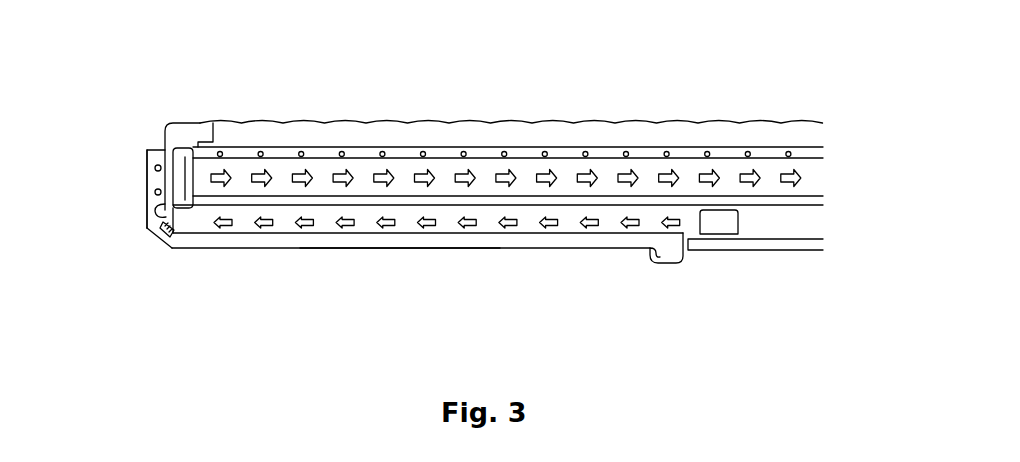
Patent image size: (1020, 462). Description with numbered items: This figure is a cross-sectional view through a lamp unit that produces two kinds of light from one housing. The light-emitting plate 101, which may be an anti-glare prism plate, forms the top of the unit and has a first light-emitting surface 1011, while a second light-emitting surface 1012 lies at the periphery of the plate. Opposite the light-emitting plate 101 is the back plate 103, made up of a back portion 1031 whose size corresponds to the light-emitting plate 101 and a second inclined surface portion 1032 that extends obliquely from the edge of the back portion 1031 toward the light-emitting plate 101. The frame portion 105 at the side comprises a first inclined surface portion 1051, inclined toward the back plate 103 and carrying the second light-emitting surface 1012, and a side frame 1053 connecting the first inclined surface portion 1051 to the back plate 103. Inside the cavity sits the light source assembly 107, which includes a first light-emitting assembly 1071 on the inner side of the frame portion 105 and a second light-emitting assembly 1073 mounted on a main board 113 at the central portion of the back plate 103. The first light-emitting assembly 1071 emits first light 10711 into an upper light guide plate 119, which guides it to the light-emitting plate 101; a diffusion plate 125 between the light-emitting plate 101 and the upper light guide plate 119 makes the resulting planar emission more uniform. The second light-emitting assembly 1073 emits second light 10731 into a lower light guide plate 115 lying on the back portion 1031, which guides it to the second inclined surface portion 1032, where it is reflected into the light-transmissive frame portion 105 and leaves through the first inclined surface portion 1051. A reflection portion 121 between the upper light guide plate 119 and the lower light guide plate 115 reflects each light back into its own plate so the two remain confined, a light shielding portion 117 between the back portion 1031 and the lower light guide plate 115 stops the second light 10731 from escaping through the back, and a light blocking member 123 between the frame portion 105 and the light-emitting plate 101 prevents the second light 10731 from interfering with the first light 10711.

The light-emitting plate 101 is at (805, 135).
The first light-emitting surface 1011 is at (748, 122).
The second light-emitting surface 1012 is at (165, 142).
The light blocking member 123 is at (189, 127).
The diffusion plate 125 is at (803, 155).
The first light 10711 is at (802, 179).
The upper light guide plate 119 is at (812, 191).
The reflection portion 121 is at (813, 203).
The lower light guide plate 115 is at (343, 228).
The light shielding portion 117 is at (264, 235).
The back plate 103 is at (495, 250).
The back portion 1031 is at (420, 250).
The second inclined surface portion 1032 is at (156, 225).
The frame portion 105 is at (55, 153).
The first inclined surface portion 1051 is at (155, 151).
The side frame 1053 is at (152, 182).
The light source assembly 107 is at (693, 63).
The first light-emitting assembly 1071 is at (183, 177).
The second light-emitting assembly 1073 is at (718, 227).
The second light 10731 is at (650, 224).
The main board 113 is at (813, 244).